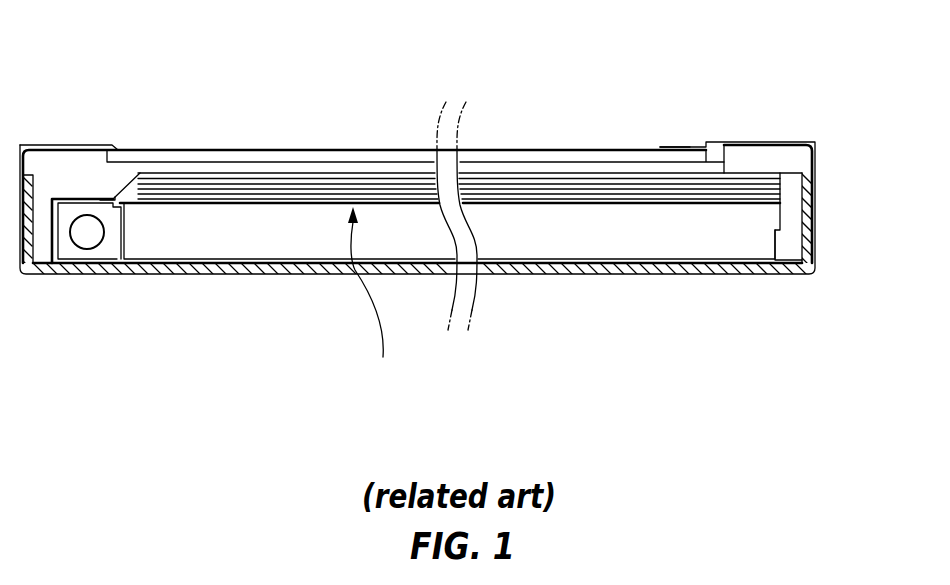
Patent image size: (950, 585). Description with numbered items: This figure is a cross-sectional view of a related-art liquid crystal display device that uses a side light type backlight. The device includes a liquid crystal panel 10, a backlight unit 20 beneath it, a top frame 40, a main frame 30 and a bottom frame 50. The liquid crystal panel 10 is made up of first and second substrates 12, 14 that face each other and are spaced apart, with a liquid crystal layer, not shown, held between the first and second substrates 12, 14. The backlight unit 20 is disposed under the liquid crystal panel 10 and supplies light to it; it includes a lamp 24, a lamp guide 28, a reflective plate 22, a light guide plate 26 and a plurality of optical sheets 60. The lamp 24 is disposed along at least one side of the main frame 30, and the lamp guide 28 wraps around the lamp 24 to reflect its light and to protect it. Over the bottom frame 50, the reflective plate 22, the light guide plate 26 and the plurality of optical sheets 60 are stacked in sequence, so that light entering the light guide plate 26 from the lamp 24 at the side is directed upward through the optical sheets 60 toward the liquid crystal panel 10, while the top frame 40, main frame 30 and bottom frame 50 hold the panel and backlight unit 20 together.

The liquid crystal panel 10 is at (580, 55).
The first substrate 12 is at (600, 162).
The second substrate 14 is at (553, 150).
The backlight unit 20 is at (372, 387).
The reflective plate 22 is at (192, 263).
The lamp 24 is at (87, 232).
The light guide plate 26 is at (265, 242).
The lamp guide 28 is at (63, 262).
The main frame 30 is at (797, 218).
The top frame 40 is at (768, 141).
The bottom frame 50 is at (718, 267).
The optical sheets 60 is at (370, 295).